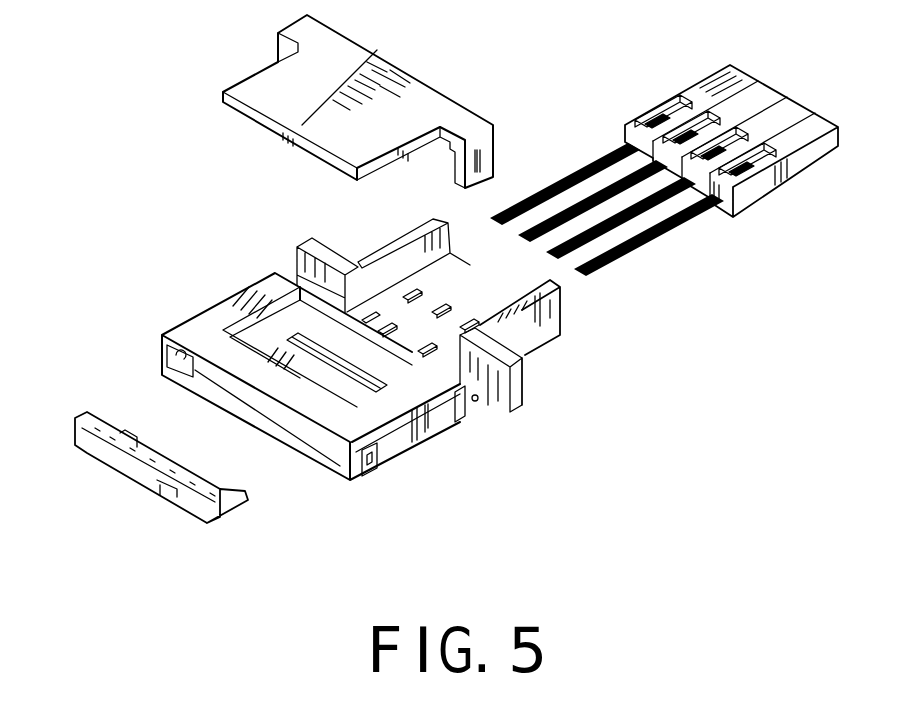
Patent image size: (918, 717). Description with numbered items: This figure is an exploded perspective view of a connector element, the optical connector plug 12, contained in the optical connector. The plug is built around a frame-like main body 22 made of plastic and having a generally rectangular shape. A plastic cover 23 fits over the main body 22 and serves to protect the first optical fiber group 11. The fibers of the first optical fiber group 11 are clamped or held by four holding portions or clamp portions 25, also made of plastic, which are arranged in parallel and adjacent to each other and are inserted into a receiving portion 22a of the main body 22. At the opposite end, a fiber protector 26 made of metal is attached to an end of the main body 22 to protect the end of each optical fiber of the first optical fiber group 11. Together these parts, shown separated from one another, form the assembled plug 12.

The first optical fiber group 11 is at (666, 234).
The optical connector plug 12 is at (538, 415).
The main body 22 is at (232, 310).
The receiving portion 22a is at (477, 283).
The cover 23 is at (377, 53).
The clamp portions 25 is at (787, 187).
The fiber protector 26 is at (80, 418).